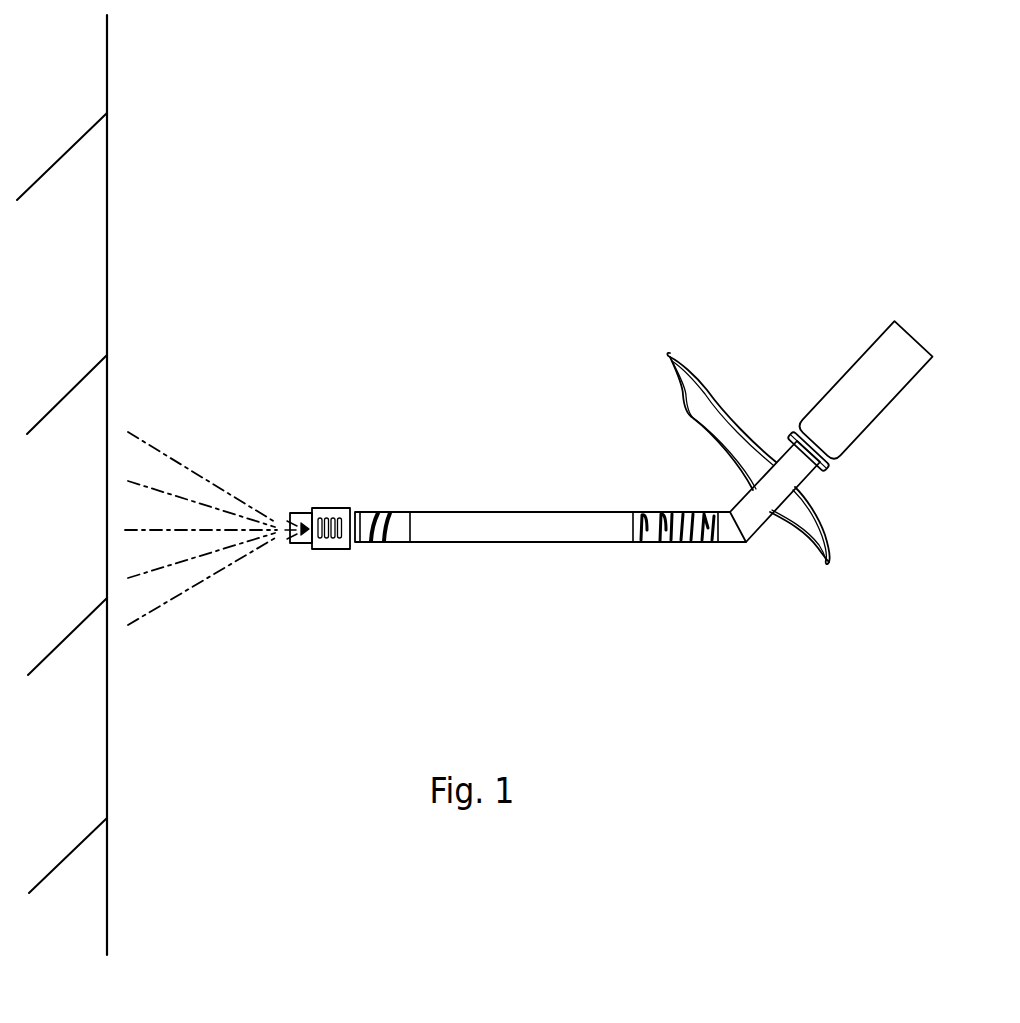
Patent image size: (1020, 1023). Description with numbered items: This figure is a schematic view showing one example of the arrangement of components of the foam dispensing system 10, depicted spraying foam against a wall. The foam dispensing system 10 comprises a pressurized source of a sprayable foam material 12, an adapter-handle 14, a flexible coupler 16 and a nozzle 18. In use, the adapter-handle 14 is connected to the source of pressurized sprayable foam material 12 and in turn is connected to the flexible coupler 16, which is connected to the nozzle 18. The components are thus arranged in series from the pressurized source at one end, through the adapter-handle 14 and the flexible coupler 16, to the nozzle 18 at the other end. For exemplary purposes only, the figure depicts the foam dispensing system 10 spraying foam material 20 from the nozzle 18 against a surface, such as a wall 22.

The foam dispensing system 10 is at (479, 334).
The pressurized source of sprayable foam material 12 is at (847, 360).
The adapter-handle 14 is at (820, 523).
The flexible coupler 16 is at (622, 542).
The nozzle 18 is at (300, 549).
The foam material 20 is at (193, 467).
The wall 22 is at (107, 88).